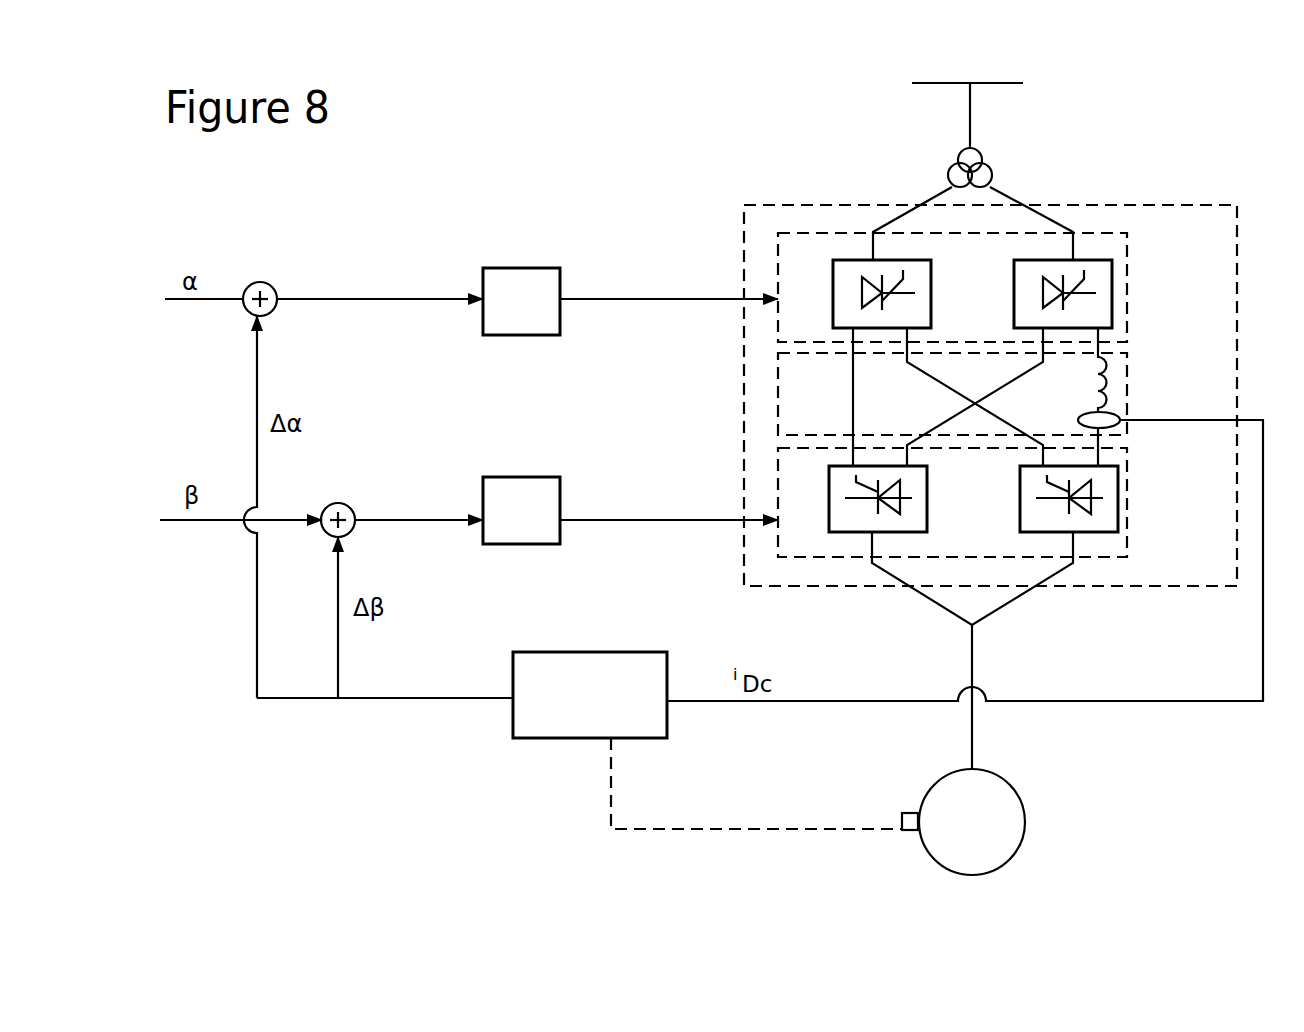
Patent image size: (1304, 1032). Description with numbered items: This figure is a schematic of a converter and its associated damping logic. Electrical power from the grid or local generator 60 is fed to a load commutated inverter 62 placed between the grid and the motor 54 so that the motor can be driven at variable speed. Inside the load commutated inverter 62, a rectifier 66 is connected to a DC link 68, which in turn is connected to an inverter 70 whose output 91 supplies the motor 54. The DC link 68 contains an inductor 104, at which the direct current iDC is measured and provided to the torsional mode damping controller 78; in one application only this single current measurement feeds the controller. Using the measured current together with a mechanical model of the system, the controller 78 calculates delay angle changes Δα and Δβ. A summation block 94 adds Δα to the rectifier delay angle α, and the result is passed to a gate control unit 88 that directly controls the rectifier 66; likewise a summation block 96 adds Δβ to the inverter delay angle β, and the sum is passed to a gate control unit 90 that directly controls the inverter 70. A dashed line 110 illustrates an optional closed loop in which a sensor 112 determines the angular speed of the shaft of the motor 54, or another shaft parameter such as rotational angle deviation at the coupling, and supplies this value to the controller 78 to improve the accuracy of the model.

The power grid or local generator 60 is at (998, 83).
The load commutated inverter 62 is at (744, 245).
The rectifier 66 is at (1127, 265).
The DC link 68 is at (998, 395).
The inverter 70 is at (1127, 505).
The inductor 104 is at (1113, 365).
The output of the LCI 91 is at (975, 628).
The motor 54 is at (1023, 810).
The dashed line 110 is at (733, 829).
The sensor 112 is at (910, 832).
The torsional mode damping controller 78 is at (533, 738).
The gate control unit 88 is at (515, 268).
The gate control unit 90 is at (515, 477).
The summation block 94 is at (266, 282).
The summation block 96 is at (345, 501).